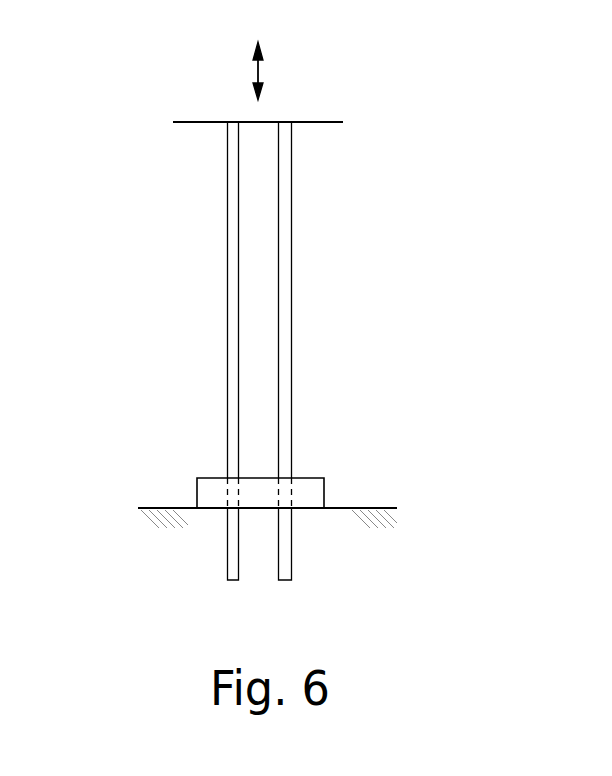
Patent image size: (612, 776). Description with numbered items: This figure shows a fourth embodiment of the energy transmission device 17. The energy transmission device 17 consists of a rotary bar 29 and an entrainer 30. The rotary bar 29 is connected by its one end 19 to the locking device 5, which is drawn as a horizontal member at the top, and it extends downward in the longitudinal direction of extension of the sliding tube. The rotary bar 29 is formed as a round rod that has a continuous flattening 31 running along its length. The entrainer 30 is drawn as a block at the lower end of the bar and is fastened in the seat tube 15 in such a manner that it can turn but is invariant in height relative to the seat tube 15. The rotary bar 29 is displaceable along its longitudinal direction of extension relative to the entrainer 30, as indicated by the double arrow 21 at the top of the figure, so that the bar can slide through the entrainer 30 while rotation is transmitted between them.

The locking device 5 is at (317, 121).
The seat tube 15 is at (140, 509).
The energy transmission device 17 is at (370, 239).
The end of the rotary bar 19 is at (227, 124).
The direction of movement arrow 21 is at (257, 62).
The rotary bar 29 is at (334, 354).
The entrainer 30 is at (312, 486).
The flattening 31 is at (263, 328).